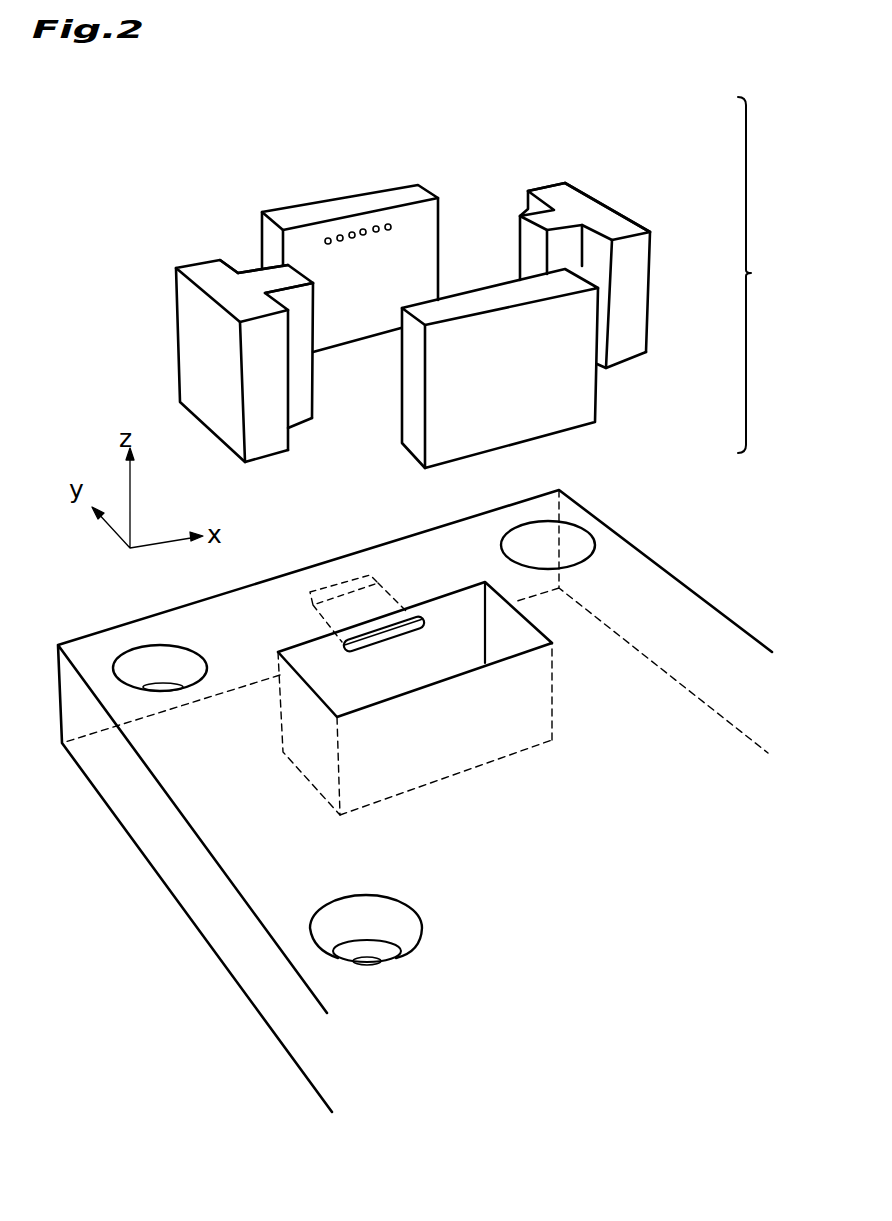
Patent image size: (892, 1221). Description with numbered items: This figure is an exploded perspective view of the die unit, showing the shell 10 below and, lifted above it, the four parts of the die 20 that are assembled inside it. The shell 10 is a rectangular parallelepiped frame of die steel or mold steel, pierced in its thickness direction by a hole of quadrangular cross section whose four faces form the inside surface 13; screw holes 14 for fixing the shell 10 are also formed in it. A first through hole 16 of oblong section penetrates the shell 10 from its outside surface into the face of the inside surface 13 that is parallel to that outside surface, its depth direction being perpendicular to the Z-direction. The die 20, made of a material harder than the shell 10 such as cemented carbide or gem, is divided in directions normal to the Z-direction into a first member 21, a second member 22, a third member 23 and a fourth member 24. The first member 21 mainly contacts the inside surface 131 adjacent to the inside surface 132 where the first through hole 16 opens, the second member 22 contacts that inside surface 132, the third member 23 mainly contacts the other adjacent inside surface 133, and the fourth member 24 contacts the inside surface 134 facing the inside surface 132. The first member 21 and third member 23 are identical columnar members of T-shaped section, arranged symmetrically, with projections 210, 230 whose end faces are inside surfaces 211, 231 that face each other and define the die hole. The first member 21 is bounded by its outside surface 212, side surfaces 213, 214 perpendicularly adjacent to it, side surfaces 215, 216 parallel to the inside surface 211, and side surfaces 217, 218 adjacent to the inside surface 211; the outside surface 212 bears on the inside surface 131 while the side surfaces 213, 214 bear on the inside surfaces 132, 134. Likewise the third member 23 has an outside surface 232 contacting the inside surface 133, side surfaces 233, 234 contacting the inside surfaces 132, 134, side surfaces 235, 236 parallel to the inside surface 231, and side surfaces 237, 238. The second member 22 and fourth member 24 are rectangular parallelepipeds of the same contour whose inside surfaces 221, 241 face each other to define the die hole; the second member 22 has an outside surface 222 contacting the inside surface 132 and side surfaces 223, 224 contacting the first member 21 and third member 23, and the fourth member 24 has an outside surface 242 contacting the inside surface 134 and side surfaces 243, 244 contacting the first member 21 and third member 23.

The shell 10 is at (135, 847).
The inside surface 13 is at (416, 665).
The inside surface 131 is at (293, 708).
The inside surface 132 is at (463, 603).
The inside surface 133 is at (530, 617).
The inside surface 134 is at (460, 748).
The screw holes 14 is at (577, 527).
The first through hole 16 is at (407, 612).
The die 20 is at (762, 275).
The first member 21 is at (229, 347).
The projection 210 is at (286, 272).
The inside surface 211 is at (300, 360).
The outside surface 212 is at (188, 377).
The side surface 213 is at (190, 290).
The side surface 214 is at (256, 418).
The side surface 215 is at (240, 273).
The side surface 216 is at (296, 437).
The side surface 217 is at (253, 265).
The side surface 218 is at (312, 418).
The second member 22 is at (329, 218).
The inside surface 221 is at (373, 222).
The outside surface 222 is at (329, 216).
The side surface 223 is at (275, 235).
The side surface 224 is at (427, 213).
The third member 23 is at (583, 242).
The projection 230 is at (528, 232).
The inside surface 231 is at (530, 251).
The outside surface 232 is at (641, 254).
The side surface 233 is at (547, 195).
The side surface 234 is at (638, 290).
The side surface 235 is at (528, 190).
The side surface 236 is at (625, 214).
The side surface 237 is at (528, 208).
The side surface 238 is at (567, 243).
The fourth member 24 is at (494, 374).
The inside surface 241 is at (456, 380).
The outside surface 242 is at (527, 392).
The side surface 243 is at (417, 422).
The side surface 244 is at (576, 376).